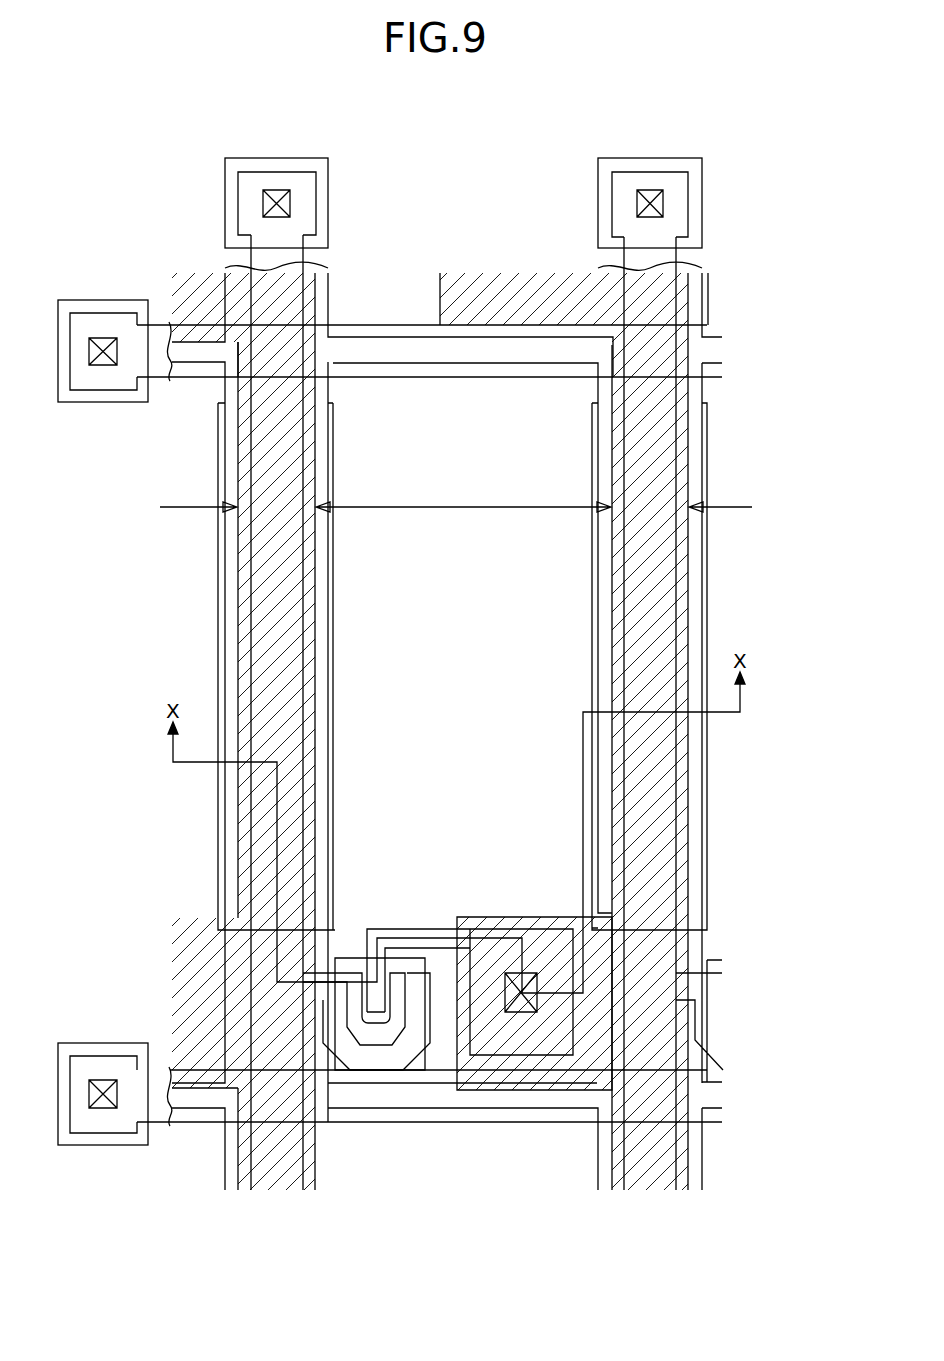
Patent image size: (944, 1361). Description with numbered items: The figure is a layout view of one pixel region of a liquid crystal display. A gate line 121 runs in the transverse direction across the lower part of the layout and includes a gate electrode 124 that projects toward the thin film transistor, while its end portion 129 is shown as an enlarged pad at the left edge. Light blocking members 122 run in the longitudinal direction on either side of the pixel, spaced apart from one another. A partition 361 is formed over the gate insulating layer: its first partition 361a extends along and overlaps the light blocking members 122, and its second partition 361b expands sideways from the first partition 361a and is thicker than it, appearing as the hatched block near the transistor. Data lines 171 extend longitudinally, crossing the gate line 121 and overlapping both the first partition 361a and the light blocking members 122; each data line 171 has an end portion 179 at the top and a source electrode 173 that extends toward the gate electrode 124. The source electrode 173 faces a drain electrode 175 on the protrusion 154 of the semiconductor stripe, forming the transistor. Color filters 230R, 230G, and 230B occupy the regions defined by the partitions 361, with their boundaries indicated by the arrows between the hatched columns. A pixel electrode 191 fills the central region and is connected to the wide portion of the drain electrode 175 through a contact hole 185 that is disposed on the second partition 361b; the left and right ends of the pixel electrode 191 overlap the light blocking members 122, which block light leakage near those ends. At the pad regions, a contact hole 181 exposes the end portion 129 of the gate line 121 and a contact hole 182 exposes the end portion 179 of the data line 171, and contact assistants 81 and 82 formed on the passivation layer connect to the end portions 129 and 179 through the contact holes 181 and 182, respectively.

The contact assistant 81 is at (78, 1145).
The contact assistant 82 is at (702, 177).
The gate line 121 is at (505, 1122).
The light blocking member 122 is at (218, 438).
The gate electrode 124 is at (428, 1045).
The end portion of gate line 129 is at (105, 1080).
The protrusion of semiconductor stripe 154 is at (355, 958).
The data line 171 is at (303, 628).
The source electrode 173 is at (373, 1070).
The drain electrode 175 is at (403, 929).
The end portion of data line 179 is at (688, 210).
The contact hole 181 is at (110, 1108).
The contact hole 182 is at (650, 190).
The contact hole 185 is at (512, 973).
The pixel electrode 191 is at (232, 558).
The red color filter 230R is at (195, 492).
The green color filter 230G is at (463, 492).
The blue color filter 230B is at (734, 492).
The partition 361 is at (510, 731).
The first partition 361a is at (688, 798).
The second partition 361b is at (528, 917).